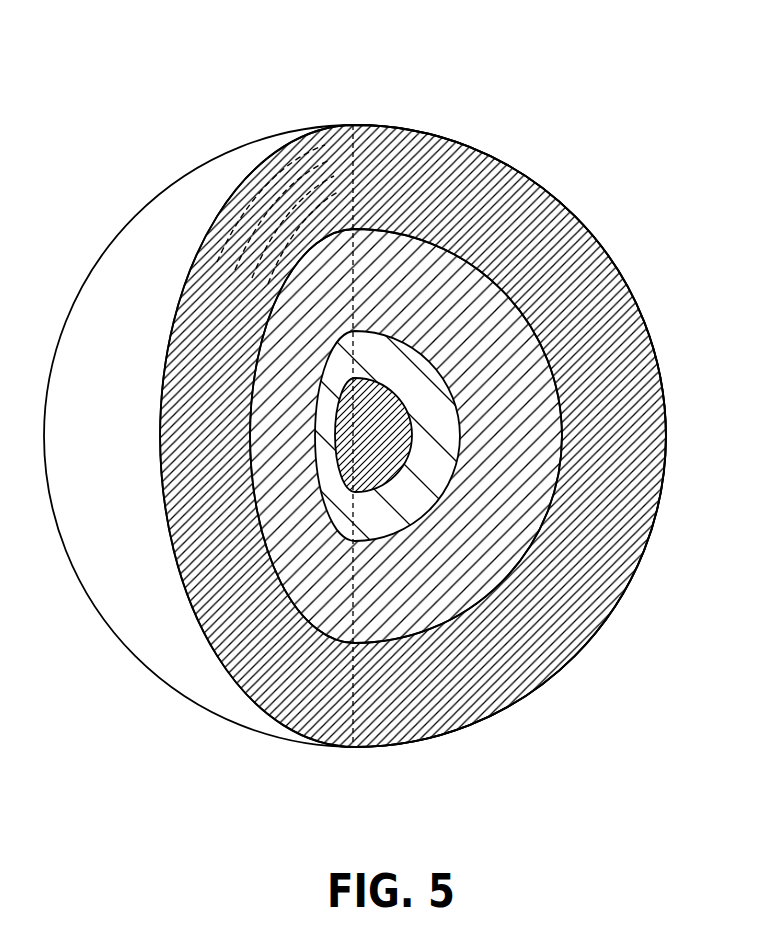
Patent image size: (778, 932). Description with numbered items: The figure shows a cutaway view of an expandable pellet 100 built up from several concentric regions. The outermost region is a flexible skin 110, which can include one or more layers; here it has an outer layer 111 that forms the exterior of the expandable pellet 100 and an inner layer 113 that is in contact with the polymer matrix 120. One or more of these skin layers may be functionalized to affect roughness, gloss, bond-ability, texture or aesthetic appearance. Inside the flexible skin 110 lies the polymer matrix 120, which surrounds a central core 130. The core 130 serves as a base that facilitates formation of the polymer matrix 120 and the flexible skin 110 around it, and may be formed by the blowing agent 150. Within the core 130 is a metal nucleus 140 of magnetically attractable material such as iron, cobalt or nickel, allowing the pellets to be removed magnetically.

The expandable pellet 100 is at (152, 95).
The flexible skin 110 is at (565, 205).
The outer layer 111 is at (296, 140).
The inner layer 113 is at (402, 135).
The polymer matrix 120 is at (453, 313).
The core 130 is at (403, 374).
The metal nucleus 140 is at (393, 438).
The blowing agent 150 is at (480, 553).